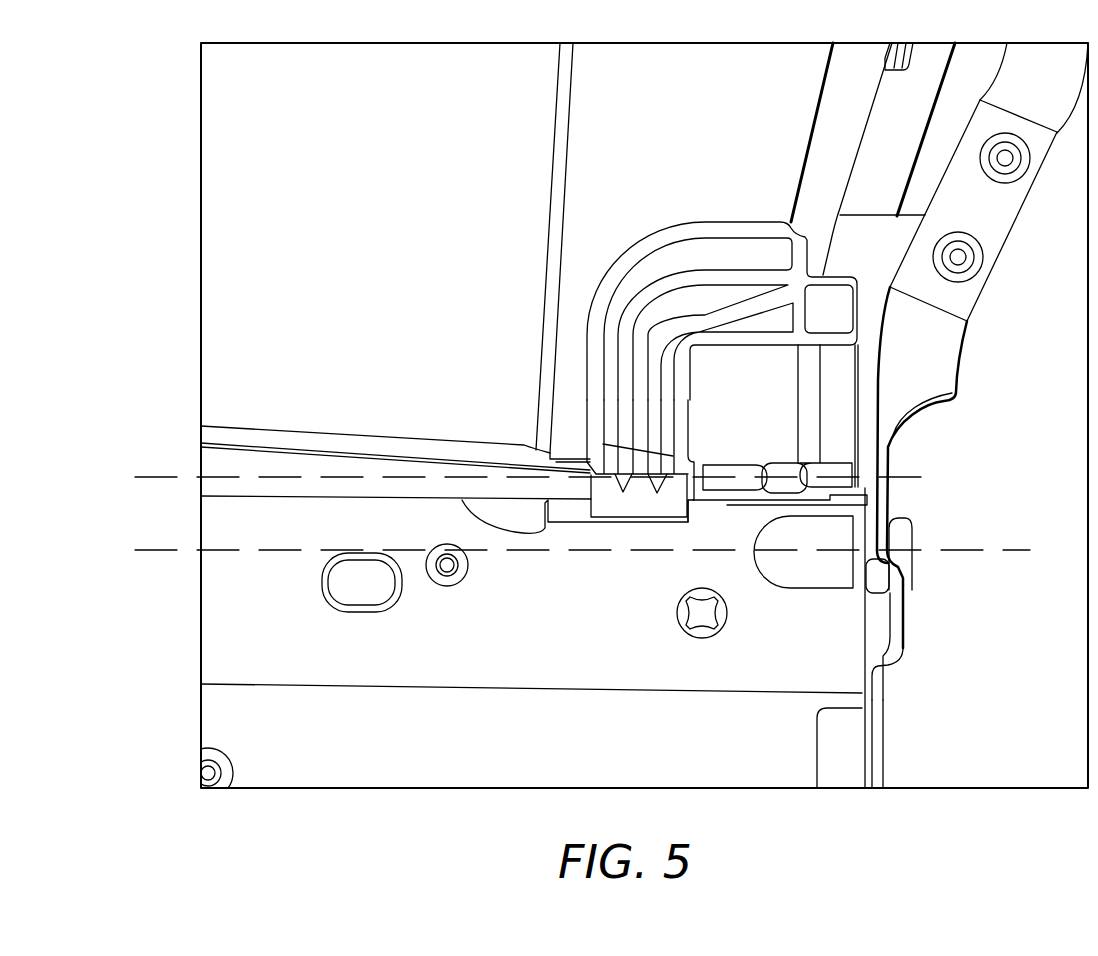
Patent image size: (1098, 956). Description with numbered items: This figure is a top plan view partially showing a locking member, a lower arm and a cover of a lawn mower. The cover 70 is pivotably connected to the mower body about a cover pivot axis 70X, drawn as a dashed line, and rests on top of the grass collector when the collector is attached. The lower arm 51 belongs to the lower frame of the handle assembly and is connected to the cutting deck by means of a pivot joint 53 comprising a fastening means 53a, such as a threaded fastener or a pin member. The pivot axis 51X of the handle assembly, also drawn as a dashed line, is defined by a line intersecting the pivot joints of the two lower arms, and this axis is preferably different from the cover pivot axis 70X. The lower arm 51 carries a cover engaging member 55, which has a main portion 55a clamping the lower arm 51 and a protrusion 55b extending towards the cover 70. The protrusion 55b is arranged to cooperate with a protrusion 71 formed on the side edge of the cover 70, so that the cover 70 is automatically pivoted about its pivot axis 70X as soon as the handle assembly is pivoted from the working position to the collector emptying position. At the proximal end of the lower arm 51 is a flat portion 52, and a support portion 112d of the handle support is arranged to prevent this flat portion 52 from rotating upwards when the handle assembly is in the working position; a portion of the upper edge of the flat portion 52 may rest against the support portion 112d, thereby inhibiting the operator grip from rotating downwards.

The cover 70 is at (371, 204).
The protrusion 71 is at (838, 312).
The cover engaging member 55 is at (971, 202).
The main portion 55a is at (992, 207).
The protrusion 55b is at (860, 230).
The lower arm 51 is at (938, 342).
The cover pivot axis 70X is at (549, 469).
The pivot axis 51X is at (603, 544).
The pivot joint 53 is at (930, 508).
The fastening means 53a is at (905, 540).
The support portion 112d is at (889, 650).
The flat portion 52 is at (880, 729).